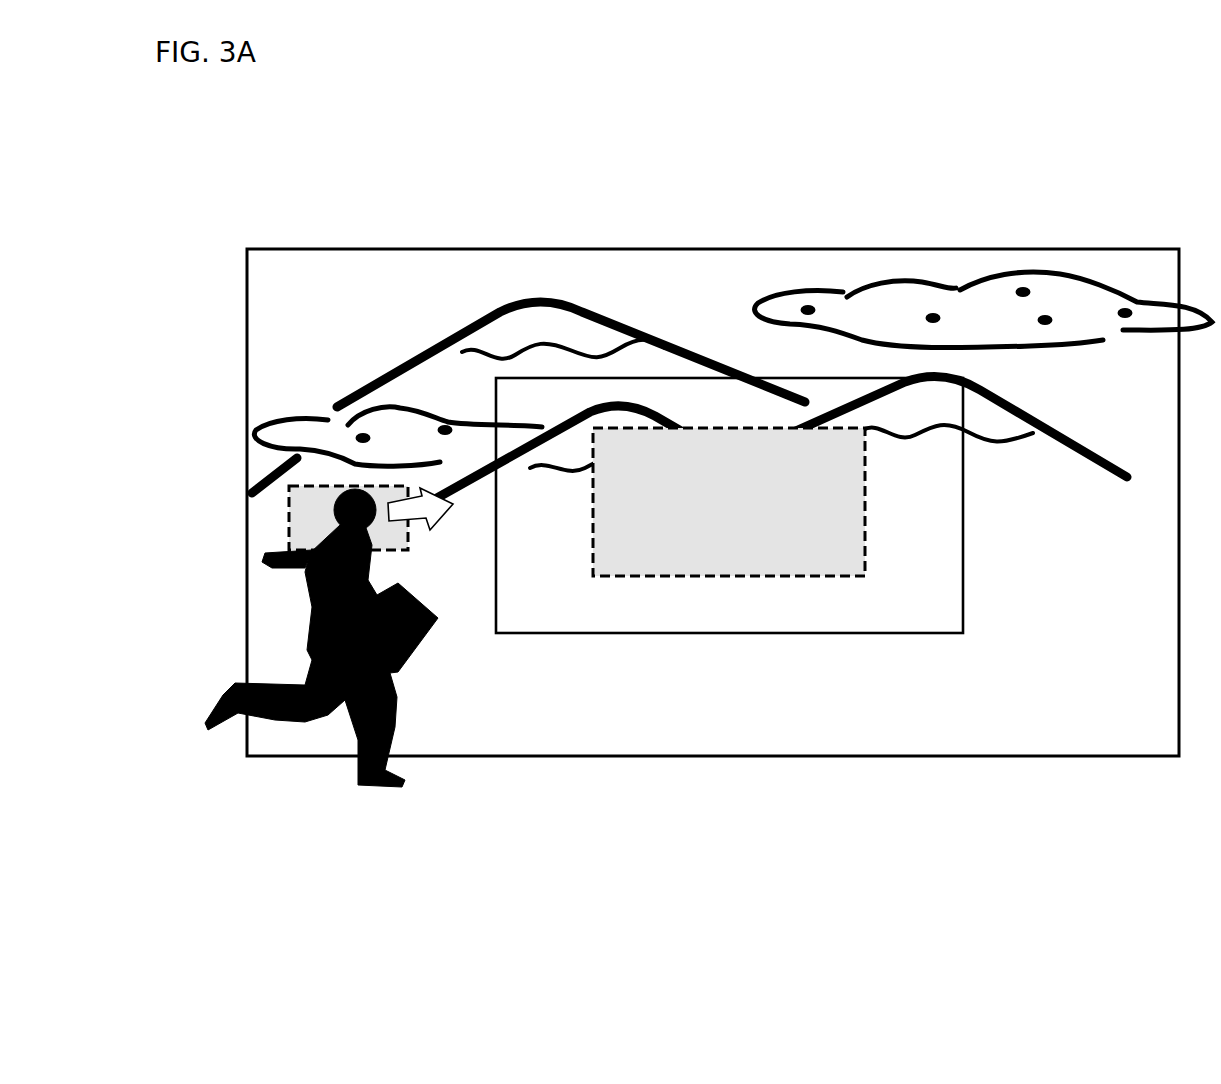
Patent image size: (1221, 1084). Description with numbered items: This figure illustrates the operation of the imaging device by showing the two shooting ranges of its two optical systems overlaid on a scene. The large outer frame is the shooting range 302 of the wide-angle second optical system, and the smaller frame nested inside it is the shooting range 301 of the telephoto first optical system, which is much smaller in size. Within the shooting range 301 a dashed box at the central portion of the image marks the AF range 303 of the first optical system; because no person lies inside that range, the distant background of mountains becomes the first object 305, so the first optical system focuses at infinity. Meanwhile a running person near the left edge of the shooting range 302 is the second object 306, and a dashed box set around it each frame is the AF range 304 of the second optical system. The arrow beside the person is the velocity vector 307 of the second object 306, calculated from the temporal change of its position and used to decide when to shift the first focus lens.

The shooting range of the first optical system 301 is at (603, 627).
The shooting range of the second optical system 302 is at (940, 756).
The AF range of the first optical system 303 is at (747, 430).
The AF range of the second optical system 304 is at (312, 488).
The first object 305 is at (650, 410).
The second object 306 is at (390, 720).
The velocity vector of the second object 307 is at (432, 505).